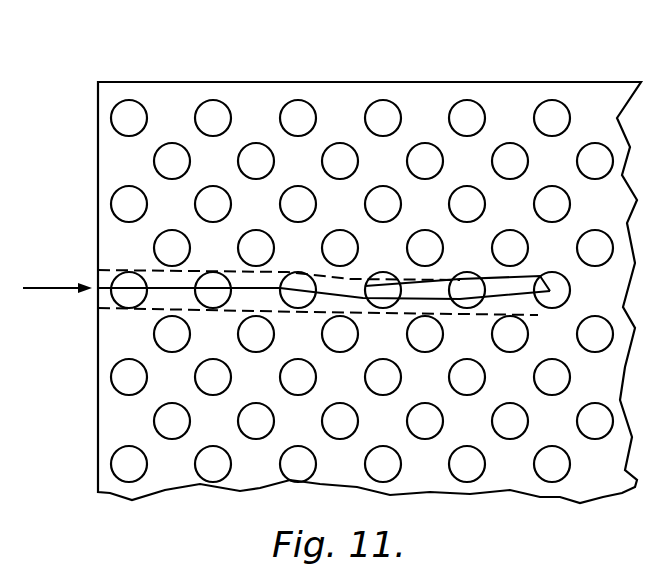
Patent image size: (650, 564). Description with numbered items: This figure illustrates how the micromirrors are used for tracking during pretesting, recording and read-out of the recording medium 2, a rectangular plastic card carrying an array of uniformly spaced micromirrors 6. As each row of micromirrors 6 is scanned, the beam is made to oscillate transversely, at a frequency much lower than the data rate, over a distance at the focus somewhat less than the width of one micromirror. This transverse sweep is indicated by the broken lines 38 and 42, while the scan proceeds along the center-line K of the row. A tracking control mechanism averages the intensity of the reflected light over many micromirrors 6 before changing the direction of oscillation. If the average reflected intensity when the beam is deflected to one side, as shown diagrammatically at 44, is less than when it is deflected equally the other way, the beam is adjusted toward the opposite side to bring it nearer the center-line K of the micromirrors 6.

The recording medium 2 is at (202, 81).
The micromirrors 6 is at (137, 112).
The broken line 38 is at (147, 268).
The broken line 42 is at (148, 308).
The deflected beam 44 is at (348, 280).
The center-line K is at (183, 288).